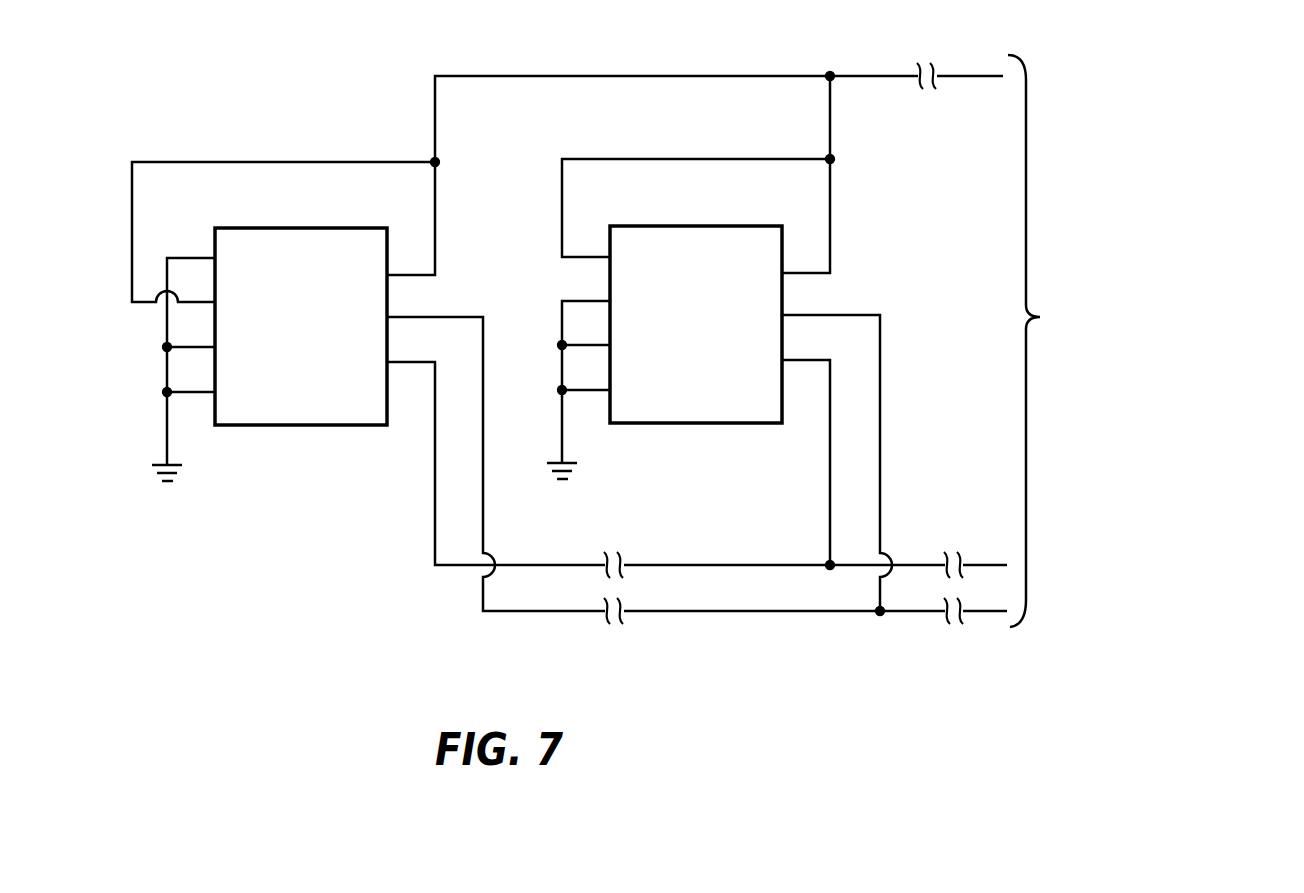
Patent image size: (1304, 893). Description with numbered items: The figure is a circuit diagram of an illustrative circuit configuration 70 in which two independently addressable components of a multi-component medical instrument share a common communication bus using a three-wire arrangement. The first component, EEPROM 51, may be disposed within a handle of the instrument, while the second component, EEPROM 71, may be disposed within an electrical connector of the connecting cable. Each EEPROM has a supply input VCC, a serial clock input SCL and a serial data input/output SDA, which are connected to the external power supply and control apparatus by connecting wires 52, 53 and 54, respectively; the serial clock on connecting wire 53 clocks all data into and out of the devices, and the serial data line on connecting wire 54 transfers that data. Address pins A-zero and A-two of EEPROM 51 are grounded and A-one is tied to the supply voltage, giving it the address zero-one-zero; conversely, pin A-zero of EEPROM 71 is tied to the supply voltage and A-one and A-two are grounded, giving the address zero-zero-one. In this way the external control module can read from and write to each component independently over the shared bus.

The circuit configuration 70 is at (247, 672).
The EEPROM 51 is at (282, 229).
The EEPROM 71 is at (675, 227).
The connecting wire 52 is at (480, 76).
The connecting wire 53 is at (530, 613).
The connecting wire 54 is at (532, 566).